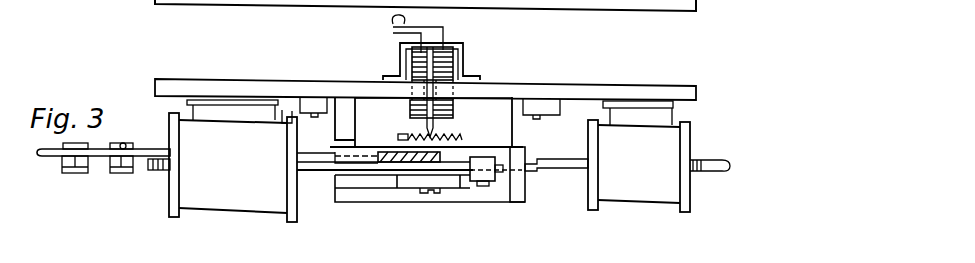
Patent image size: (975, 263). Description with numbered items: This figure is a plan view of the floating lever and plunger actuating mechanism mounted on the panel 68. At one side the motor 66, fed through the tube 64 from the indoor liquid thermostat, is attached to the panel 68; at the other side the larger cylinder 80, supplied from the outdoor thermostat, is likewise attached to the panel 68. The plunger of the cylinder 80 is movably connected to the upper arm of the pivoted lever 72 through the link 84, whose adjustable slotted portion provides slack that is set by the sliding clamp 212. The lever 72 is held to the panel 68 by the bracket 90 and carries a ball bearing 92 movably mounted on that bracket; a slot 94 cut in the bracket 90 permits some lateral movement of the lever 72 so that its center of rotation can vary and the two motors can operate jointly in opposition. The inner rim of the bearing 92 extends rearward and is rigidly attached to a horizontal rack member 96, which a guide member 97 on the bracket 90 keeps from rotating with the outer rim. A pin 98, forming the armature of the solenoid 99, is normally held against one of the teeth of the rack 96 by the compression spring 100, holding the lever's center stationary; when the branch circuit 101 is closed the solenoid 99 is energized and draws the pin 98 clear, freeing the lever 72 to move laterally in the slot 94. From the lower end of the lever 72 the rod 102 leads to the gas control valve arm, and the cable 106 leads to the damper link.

The tube 64 is at (718, 171).
The motor 66 is at (648, 195).
The panel 68 is at (532, 91).
The pivoted lever 72 is at (100, 157).
The cylinder 80 is at (224, 203).
The link 84 is at (313, 166).
The bracket 90 is at (517, 194).
The ball bearing 92 is at (407, 178).
The slot 94 is at (384, 150).
The rack member 96 is at (423, 135).
The guide member 97 is at (483, 142).
The pin 98 is at (437, 129).
The solenoid 99 is at (455, 63).
The compression spring 100 is at (400, 72).
The branch circuit 101 is at (392, 24).
The rod 102 is at (68, 147).
The cable 106 is at (130, 145).
The sliding clamp 212 is at (474, 183).